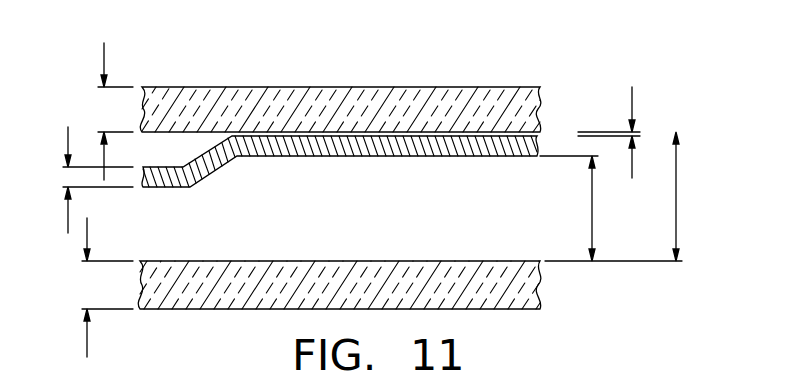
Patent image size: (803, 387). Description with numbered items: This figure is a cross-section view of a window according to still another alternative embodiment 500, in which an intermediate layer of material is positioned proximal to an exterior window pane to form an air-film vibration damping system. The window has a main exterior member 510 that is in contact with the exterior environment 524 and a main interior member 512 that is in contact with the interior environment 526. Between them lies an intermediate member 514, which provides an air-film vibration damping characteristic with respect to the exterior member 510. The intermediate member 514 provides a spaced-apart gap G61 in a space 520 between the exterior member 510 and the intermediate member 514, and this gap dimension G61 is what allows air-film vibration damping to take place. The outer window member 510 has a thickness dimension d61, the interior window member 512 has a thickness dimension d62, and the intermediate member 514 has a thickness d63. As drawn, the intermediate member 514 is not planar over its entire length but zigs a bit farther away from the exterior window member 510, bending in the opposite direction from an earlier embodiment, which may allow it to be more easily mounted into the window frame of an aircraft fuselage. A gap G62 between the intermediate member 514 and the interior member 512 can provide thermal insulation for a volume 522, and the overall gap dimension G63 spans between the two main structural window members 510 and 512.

The alternative embodiment 500 is at (549, 62).
The main exterior member 510 is at (297, 123).
The main interior member 512 is at (297, 299).
The intermediate member 514 is at (327, 158).
The space 520 is at (555, 132).
The volume 522 is at (524, 243).
The exterior environment 524 is at (245, 65).
The interior environment 526 is at (245, 330).
The thickness dimension of outer window member d61 is at (104, 56).
The thickness dimension of interior window member d62 is at (87, 345).
The thickness of intermediate member d63 is at (68, 225).
The gap dimension G61 is at (633, 105).
The gap G62 is at (592, 222).
The overall gap dimension G63 is at (677, 188).